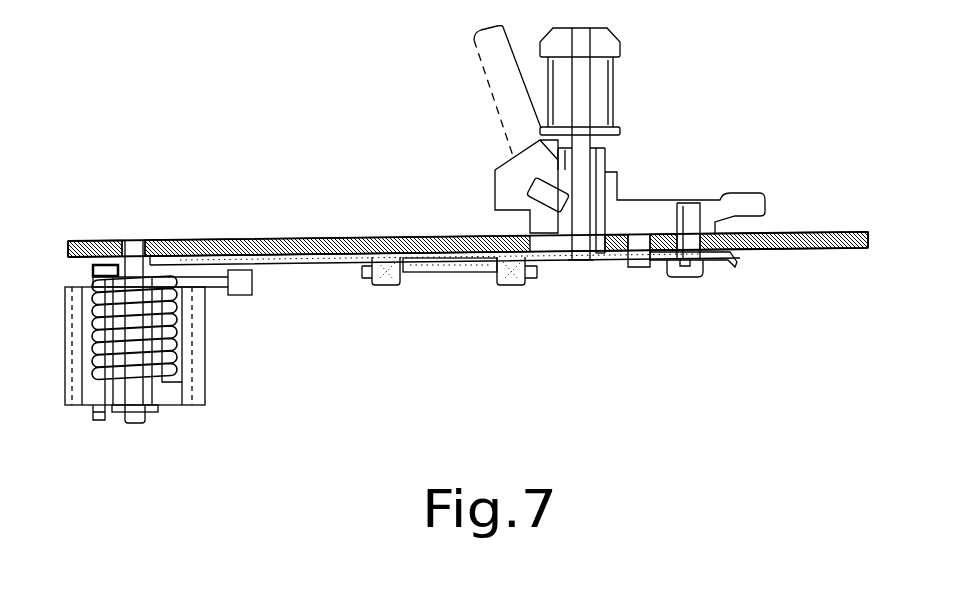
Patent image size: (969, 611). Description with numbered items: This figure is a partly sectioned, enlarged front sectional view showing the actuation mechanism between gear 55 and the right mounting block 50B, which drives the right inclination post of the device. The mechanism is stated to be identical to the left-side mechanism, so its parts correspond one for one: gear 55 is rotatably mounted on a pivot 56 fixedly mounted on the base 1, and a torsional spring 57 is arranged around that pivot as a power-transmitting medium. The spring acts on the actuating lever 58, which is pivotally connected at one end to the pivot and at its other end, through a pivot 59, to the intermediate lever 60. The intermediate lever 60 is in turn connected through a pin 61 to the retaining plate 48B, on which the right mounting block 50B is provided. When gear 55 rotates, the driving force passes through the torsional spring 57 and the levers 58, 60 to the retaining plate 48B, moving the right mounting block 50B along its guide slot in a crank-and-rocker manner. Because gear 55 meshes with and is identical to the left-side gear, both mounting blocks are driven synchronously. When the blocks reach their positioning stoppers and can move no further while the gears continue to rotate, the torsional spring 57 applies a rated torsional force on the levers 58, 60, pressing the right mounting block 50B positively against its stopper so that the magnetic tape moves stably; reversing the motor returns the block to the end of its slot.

The base 1 is at (792, 235).
The locking pin 48B is at (715, 262).
The right mounting block 50B is at (653, 212).
The gear 55 is at (168, 388).
The plunger pin 56 is at (141, 238).
The torsional spring 57 is at (95, 420).
The lever 58 is at (285, 268).
The clip 59 is at (384, 280).
The lever 60 is at (450, 272).
The clip 61 is at (518, 278).